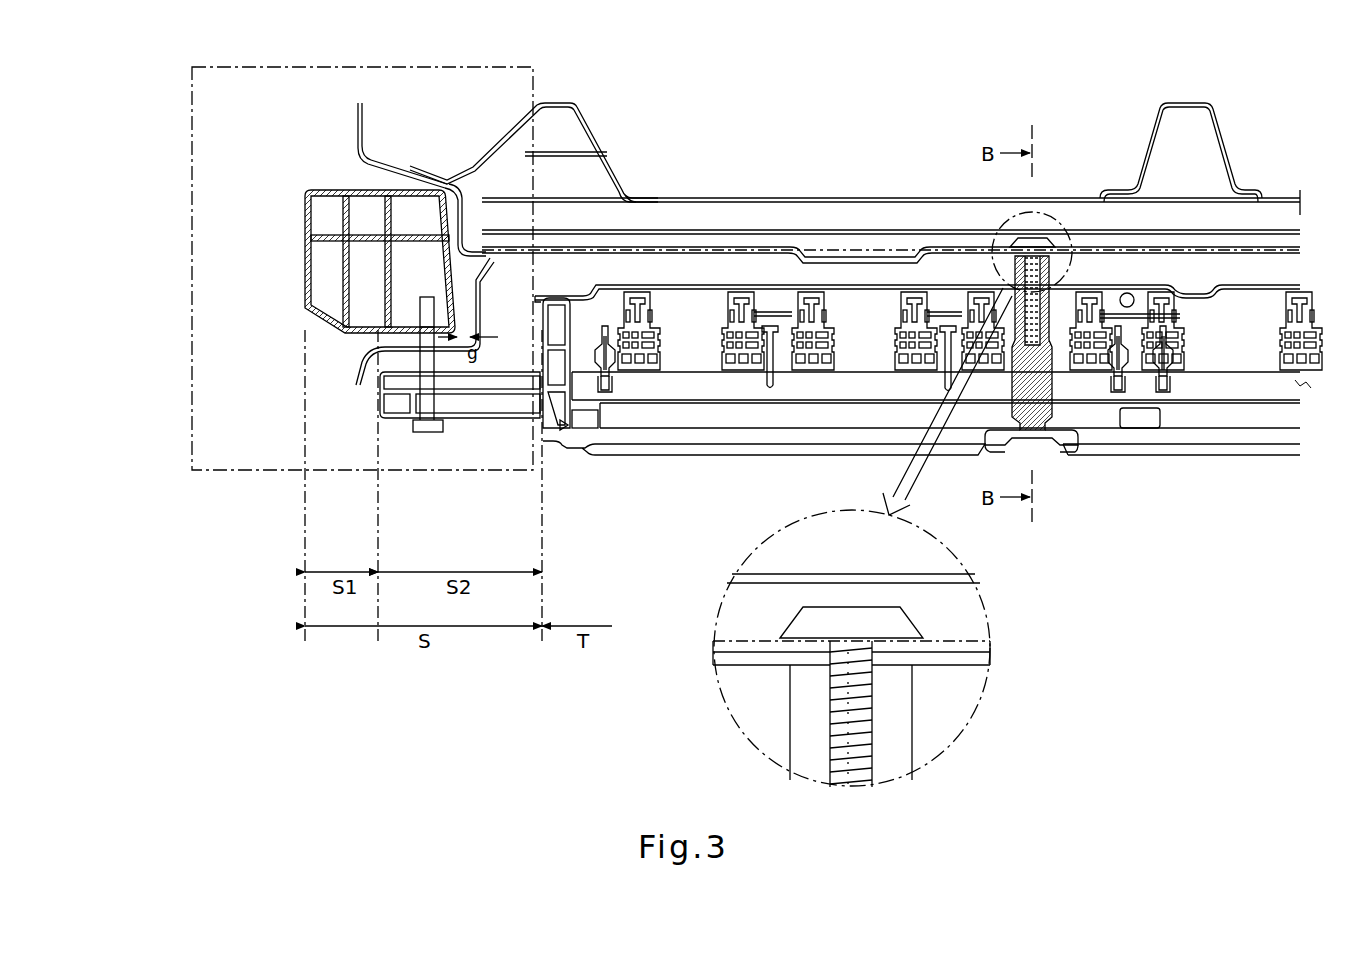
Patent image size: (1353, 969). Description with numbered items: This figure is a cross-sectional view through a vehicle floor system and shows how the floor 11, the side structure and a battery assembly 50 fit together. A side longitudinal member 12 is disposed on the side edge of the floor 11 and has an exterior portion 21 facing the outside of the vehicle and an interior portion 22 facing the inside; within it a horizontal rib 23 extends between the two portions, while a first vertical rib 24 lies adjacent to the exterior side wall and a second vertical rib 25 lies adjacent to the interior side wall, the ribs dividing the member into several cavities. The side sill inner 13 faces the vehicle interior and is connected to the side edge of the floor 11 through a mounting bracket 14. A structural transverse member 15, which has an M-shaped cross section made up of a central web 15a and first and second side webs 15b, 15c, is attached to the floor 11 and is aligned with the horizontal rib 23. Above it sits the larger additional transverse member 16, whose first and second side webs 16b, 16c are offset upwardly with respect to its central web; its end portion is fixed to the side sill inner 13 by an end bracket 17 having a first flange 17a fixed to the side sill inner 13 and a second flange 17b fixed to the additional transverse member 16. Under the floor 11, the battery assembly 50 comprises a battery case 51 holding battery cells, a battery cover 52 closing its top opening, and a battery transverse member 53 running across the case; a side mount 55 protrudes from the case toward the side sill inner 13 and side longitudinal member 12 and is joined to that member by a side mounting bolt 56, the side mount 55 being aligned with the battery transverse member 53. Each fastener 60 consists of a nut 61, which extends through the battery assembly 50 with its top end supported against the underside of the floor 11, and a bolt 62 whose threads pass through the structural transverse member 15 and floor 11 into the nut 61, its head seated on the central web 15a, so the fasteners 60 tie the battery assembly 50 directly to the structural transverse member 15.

The floor 11 is at (891, 472).
The side longitudinal member 12 is at (326, 266).
The side sill inner 13 is at (384, 160).
The mounting bracket 14 is at (484, 280).
The structural transverse member 15 is at (891, 370).
The central web 15a is at (757, 638).
The first side web 15b is at (891, 392).
The second side web 15c is at (890, 232).
The additional transverse member 16 is at (891, 159).
The first side web 16b is at (891, 159).
The second side web 16c is at (854, 198).
The end bracket 17 is at (630, 190).
The first flange 17a is at (424, 165).
The second flange 17b is at (656, 194).
The exterior portion 21 is at (300, 234).
The interior portion 22 is at (454, 210).
The horizontal rib 23 is at (328, 245).
The first vertical rib 24 is at (338, 300).
The second vertical rib 25 is at (398, 293).
The battery assembly 50 is at (928, 383).
The battery case 51 is at (648, 456).
The battery cover 52 is at (636, 286).
The battery transverse member 53 is at (848, 362).
The side mount 55 is at (492, 422).
The side mounting bolt 56 is at (430, 434).
The fastener 60 is at (899, 521).
The nut 61 is at (1050, 392).
The bolt 62 is at (1040, 240).